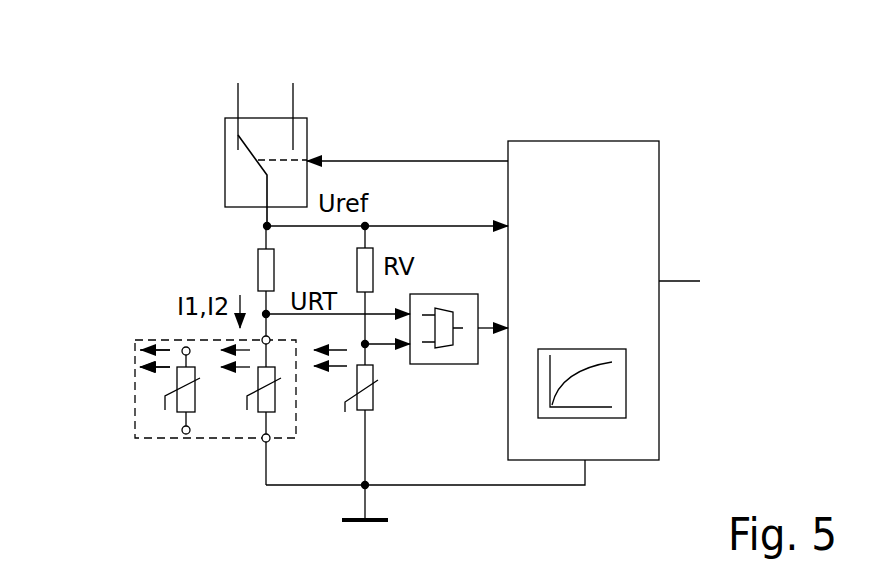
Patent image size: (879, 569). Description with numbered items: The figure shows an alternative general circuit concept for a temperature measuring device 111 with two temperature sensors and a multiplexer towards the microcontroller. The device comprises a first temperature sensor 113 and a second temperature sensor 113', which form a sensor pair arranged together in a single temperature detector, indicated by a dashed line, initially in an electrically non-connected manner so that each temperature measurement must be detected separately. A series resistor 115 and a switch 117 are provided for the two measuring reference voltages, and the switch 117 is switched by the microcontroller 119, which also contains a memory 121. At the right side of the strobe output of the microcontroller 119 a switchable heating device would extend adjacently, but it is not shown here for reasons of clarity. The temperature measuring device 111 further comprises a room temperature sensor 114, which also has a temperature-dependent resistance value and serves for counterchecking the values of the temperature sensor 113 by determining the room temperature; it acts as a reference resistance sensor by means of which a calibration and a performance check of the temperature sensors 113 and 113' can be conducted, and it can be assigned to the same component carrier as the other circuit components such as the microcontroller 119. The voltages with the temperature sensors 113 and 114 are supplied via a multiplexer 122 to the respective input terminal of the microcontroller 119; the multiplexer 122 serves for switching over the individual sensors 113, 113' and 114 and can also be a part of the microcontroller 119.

The temperature measuring device 111 is at (531, 100).
The first temperature sensor 113 is at (114, 390).
The second temperature sensor 113' is at (220, 421).
The room temperature sensor 114 is at (343, 422).
The series resistor 115 is at (228, 263).
The switch 117 is at (208, 170).
The microcontroller 119 is at (633, 260).
The memory 121 is at (615, 383).
The multiplexer 122 is at (475, 385).